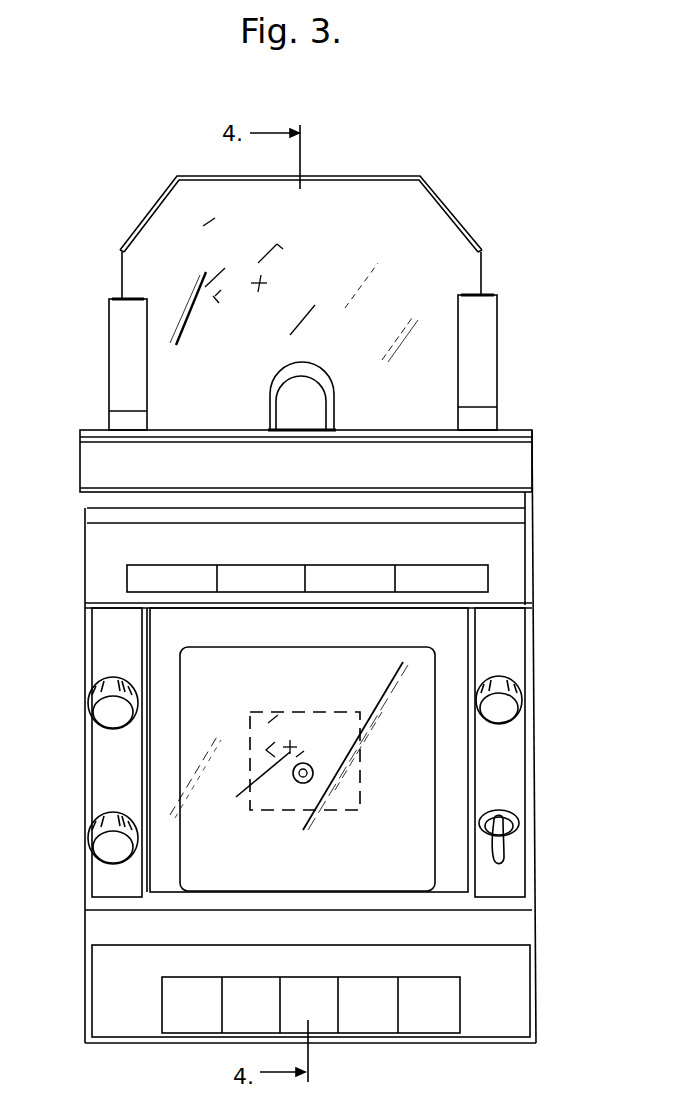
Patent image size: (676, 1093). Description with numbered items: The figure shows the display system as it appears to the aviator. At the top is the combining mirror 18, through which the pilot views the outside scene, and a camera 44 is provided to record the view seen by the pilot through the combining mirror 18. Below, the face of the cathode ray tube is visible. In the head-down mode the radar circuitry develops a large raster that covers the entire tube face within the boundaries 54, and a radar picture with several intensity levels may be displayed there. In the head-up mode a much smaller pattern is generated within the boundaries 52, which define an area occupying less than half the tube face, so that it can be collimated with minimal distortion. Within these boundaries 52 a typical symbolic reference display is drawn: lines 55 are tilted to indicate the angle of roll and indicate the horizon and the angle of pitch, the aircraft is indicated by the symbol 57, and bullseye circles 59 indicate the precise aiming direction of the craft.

The combining mirror 18 is at (128, 258).
The camera 44 is at (282, 388).
The boundaries 52 is at (362, 812).
The boundaries 54 is at (428, 650).
The lines 55 is at (302, 728).
The symbol 57 is at (246, 784).
The bullseye circles 59 is at (307, 784).